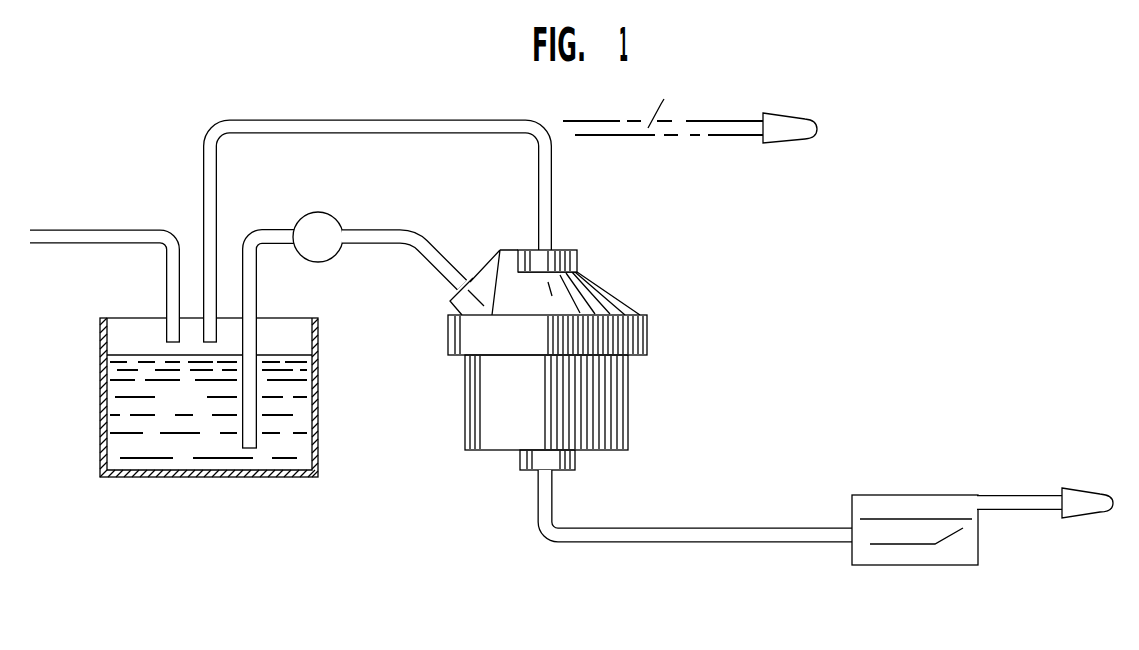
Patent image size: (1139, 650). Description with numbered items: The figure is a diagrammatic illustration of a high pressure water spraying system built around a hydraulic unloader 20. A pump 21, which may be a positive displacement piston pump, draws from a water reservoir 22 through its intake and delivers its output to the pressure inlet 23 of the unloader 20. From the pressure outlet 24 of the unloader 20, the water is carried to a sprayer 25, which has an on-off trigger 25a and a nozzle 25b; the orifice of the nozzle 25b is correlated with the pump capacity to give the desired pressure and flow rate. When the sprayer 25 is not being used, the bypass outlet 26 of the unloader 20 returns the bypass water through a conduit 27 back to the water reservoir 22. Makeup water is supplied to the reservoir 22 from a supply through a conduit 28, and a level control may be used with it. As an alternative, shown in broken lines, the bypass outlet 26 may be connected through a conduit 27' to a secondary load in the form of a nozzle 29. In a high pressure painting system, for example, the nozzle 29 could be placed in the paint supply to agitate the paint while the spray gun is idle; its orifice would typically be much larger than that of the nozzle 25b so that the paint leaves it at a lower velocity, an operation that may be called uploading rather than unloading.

The hydraulic unloader 20 is at (700, 344).
The pump 21 is at (312, 218).
The water reservoir 22 is at (198, 413).
The pressure inlet 23 is at (494, 226).
The pressure outlet 24 is at (556, 473).
The sprayer 25 is at (942, 500).
The on-off trigger 25a is at (912, 548).
The nozzle 25b is at (1085, 500).
The bypass outlet 26 is at (563, 243).
The conduit 27 is at (374, 208).
The conduit 27' is at (663, 106).
The conduit 28 is at (85, 237).
The nozzle 29 is at (787, 125).